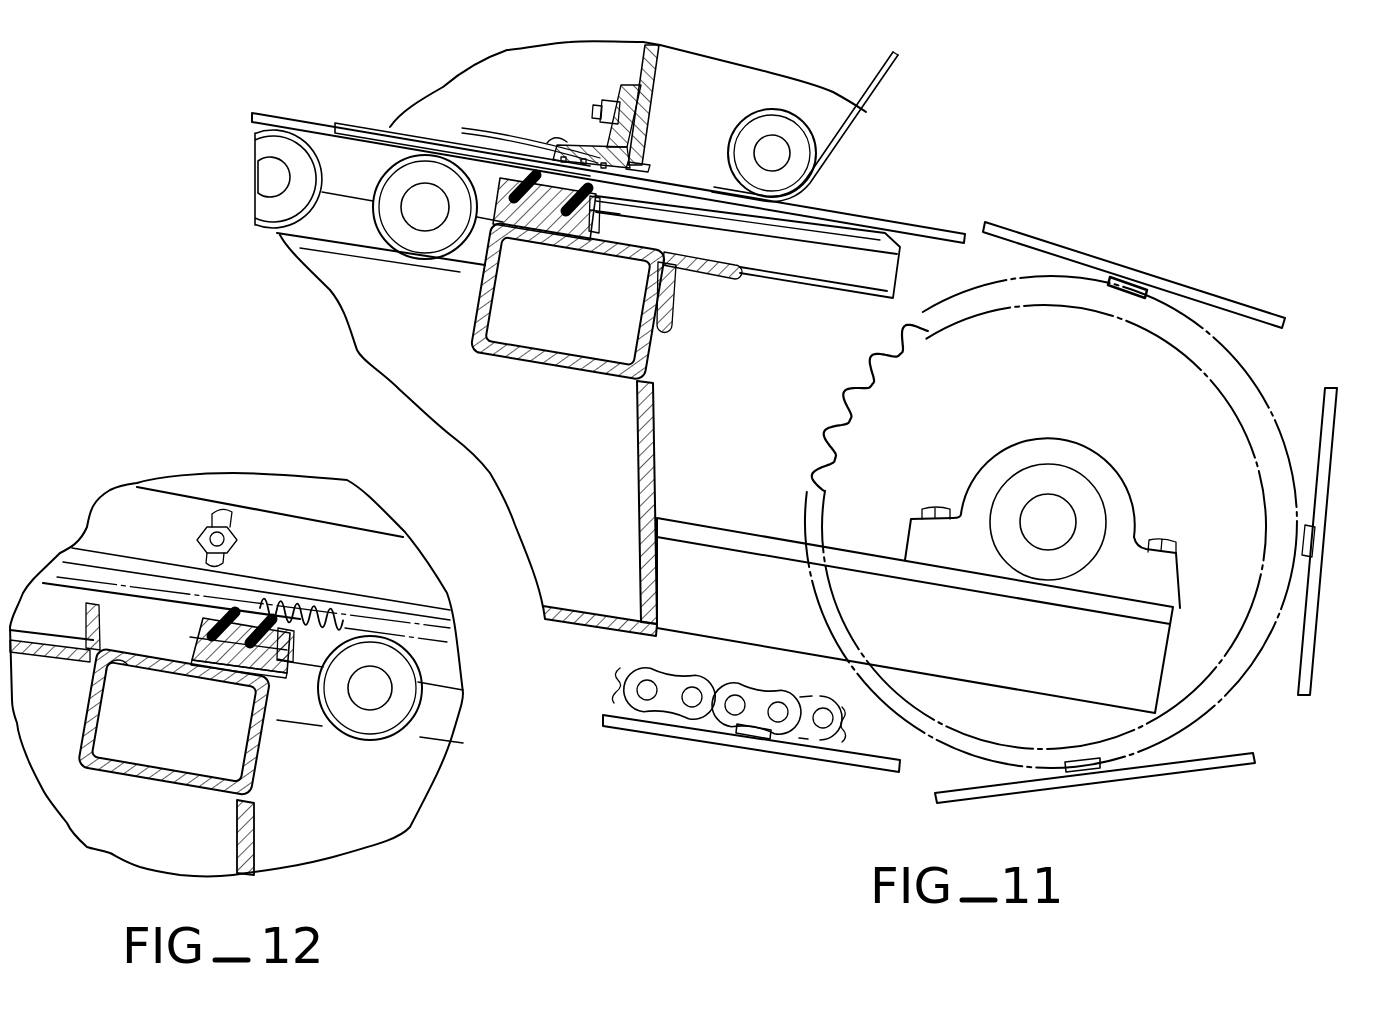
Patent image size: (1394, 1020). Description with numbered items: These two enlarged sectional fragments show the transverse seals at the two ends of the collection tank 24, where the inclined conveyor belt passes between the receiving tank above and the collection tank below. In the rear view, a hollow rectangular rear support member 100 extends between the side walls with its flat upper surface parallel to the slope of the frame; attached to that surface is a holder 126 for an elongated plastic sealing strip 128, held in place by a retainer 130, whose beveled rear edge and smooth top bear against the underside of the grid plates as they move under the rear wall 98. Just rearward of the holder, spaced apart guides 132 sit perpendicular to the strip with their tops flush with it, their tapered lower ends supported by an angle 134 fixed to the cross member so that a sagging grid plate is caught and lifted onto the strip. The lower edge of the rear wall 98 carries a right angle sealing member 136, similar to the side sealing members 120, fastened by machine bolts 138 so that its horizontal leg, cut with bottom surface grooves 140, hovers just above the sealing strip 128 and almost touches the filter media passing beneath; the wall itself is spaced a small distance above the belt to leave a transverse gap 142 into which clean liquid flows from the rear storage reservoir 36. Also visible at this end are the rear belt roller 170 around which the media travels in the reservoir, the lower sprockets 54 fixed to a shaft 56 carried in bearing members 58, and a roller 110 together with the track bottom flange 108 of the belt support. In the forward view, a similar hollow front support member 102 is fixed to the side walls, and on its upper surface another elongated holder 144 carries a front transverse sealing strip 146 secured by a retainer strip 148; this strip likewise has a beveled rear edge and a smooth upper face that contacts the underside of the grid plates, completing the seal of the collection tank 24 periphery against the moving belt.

In FIG. 11, the collection tank 24 is at (505, 103).
In FIG. 11, the rear storage reservoir 36 is at (751, 115).
In FIG. 11, the lower sprockets 54 is at (817, 433).
In FIG. 11, the shaft 56 is at (1075, 510).
In FIG. 11, the bearing members 58 is at (1138, 537).
In FIG. 11, the rear wall 98 is at (660, 50).
In FIG. 11, the rear support member 100 is at (558, 368).
In FIG. 12, the front support member 102 is at (263, 757).
In FIG. 11, the track bottom flange 108 is at (385, 236).
In FIG. 12, the track bottom flange 108 is at (377, 741).
In FIG. 11, the roller 110 is at (425, 227).
In FIG. 12, the side sealing members 120 is at (380, 575).
In FIG. 11, the holder 126 is at (505, 212).
In FIG. 11, the sealing strip 128 is at (673, 212).
In FIG. 11, the retainer 130 is at (603, 212).
In FIG. 11, the guides 132 is at (887, 268).
In FIG. 11, the angle 134 is at (677, 317).
In FIG. 11, the right angle sealing member 136 is at (597, 135).
In FIG. 11, the machine bolts 138 is at (613, 102).
In FIG. 11, the bottom surface grooves 140 is at (520, 150).
In FIG. 11, the transverse gap 142 is at (640, 170).
In FIG. 12, the holder 144 is at (193, 648).
In FIG. 12, the front transverse sealing strip 146 is at (243, 610).
In FIG. 12, the retainer strip 148 is at (295, 655).
In FIG. 11, the rear belt roller 170 is at (821, 112).